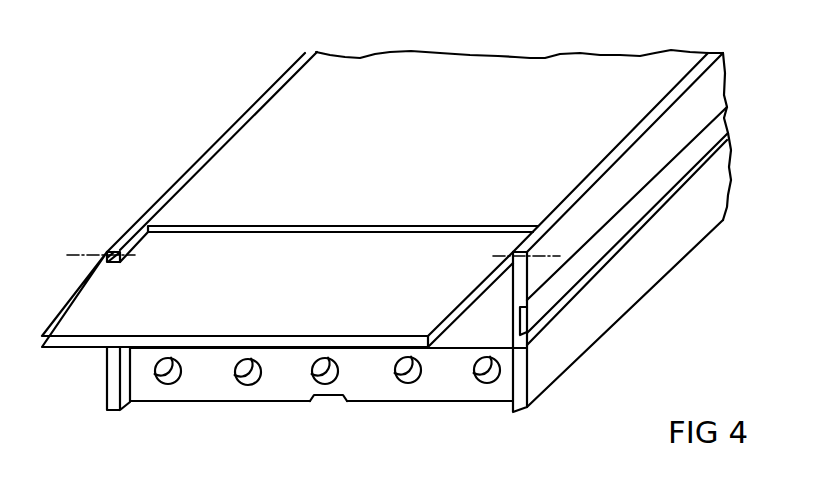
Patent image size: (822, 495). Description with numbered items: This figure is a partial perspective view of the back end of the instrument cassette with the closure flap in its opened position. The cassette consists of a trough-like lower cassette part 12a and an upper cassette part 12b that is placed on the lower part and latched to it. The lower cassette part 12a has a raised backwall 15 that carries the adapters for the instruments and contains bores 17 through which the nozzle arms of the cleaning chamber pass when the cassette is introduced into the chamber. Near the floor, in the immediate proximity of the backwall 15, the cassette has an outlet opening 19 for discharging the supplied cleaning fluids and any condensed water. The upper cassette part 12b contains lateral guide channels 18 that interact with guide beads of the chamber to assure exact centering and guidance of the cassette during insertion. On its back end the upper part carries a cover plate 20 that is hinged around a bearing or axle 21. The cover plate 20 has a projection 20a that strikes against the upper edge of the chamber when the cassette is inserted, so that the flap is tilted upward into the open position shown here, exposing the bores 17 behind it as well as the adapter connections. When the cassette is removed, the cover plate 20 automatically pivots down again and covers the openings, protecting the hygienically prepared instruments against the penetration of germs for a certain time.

The lower cassette part 12a is at (716, 188).
The upper cassette part 12b is at (708, 90).
The backwall 15 is at (148, 392).
The bores 17 is at (316, 380).
The guide channels 18 is at (561, 280).
The outlet opening 19 is at (328, 401).
The cover plate 20 is at (97, 323).
The projection 20a is at (353, 237).
The axle 21 is at (73, 250).